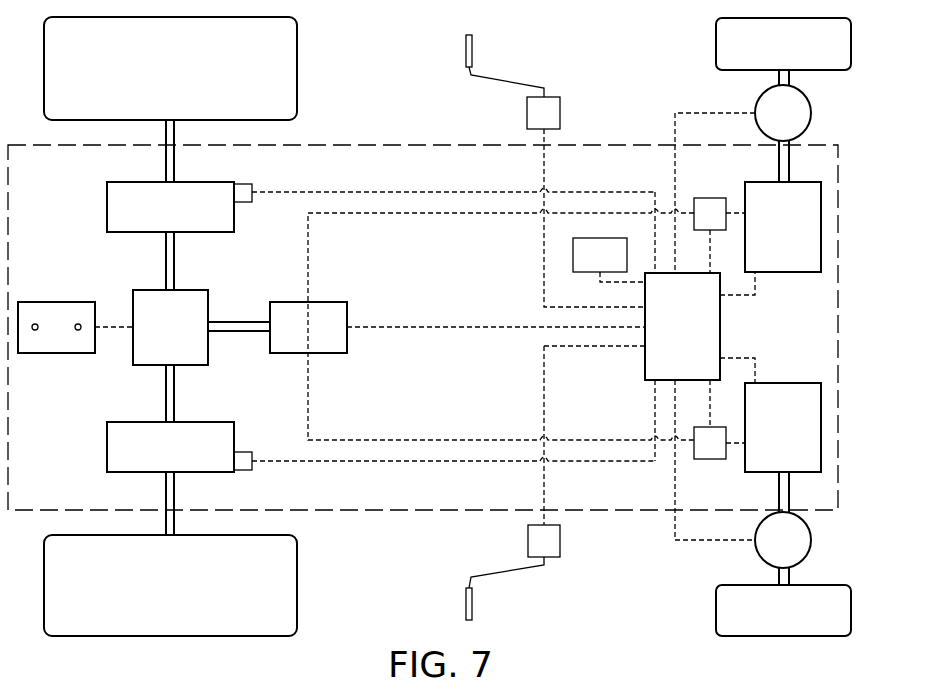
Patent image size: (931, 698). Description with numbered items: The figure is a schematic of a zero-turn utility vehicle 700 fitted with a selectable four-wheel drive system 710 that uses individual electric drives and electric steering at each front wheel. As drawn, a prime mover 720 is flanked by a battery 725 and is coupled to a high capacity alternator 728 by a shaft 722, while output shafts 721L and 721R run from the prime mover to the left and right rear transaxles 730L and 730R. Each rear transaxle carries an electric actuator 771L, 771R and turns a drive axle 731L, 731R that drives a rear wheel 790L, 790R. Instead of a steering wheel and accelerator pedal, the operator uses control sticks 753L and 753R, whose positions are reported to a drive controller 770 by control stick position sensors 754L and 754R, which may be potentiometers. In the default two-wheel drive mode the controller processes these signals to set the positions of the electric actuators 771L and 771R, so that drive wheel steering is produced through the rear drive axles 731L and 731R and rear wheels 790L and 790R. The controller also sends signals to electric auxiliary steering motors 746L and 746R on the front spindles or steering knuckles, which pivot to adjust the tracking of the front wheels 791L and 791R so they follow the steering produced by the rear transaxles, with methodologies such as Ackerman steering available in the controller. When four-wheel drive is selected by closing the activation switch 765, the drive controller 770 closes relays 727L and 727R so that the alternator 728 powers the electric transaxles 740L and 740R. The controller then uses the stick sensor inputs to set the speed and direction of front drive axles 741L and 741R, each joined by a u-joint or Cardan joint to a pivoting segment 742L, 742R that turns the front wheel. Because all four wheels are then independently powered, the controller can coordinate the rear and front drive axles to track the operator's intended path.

The utility vehicle 700 is at (389, 103).
The selectable four-wheel drive system 710 is at (64, 182).
The prime mover (PM) 720 is at (208, 352).
The left output shaft 721L is at (166, 261).
The right output shaft 721R is at (166, 393).
The alternator drive shaft 722 is at (238, 322).
The battery (B) 725 is at (35, 302).
The relay 727L is at (710, 198).
The relay 727R is at (710, 459).
The high capacity alternator 728 is at (347, 302).
The rear transaxle 730L is at (107, 208).
The rear transaxle 730R is at (107, 447).
The drive axle 731L is at (166, 154).
The drive axle 731R is at (166, 483).
The electric transaxle 740L is at (821, 225).
The electric transaxle 740R is at (821, 428).
The drive axle 741L is at (789, 160).
The drive axle 741R is at (789, 492).
The pivoting segment 742L is at (789, 77).
The pivoting segment 742R is at (789, 576).
The electric auxiliary steering motor 746L is at (811, 113).
The electric auxiliary steering motor 746R is at (811, 540).
The control stick 753L is at (495, 79).
The control stick 753R is at (495, 577).
The control stick position sensor 754L is at (557, 97).
The control stick position sensor 754R is at (557, 557).
The activation switch 765 is at (573, 252).
The drive controller 770 is at (720, 327).
The electric actuator 771L is at (248, 184).
The electric actuator 771R is at (249, 470).
The rear wheel 790L is at (143, 81).
The rear wheel 790R is at (141, 597).
The front wheel 791L is at (811, 56).
The front wheel 791R is at (812, 623).